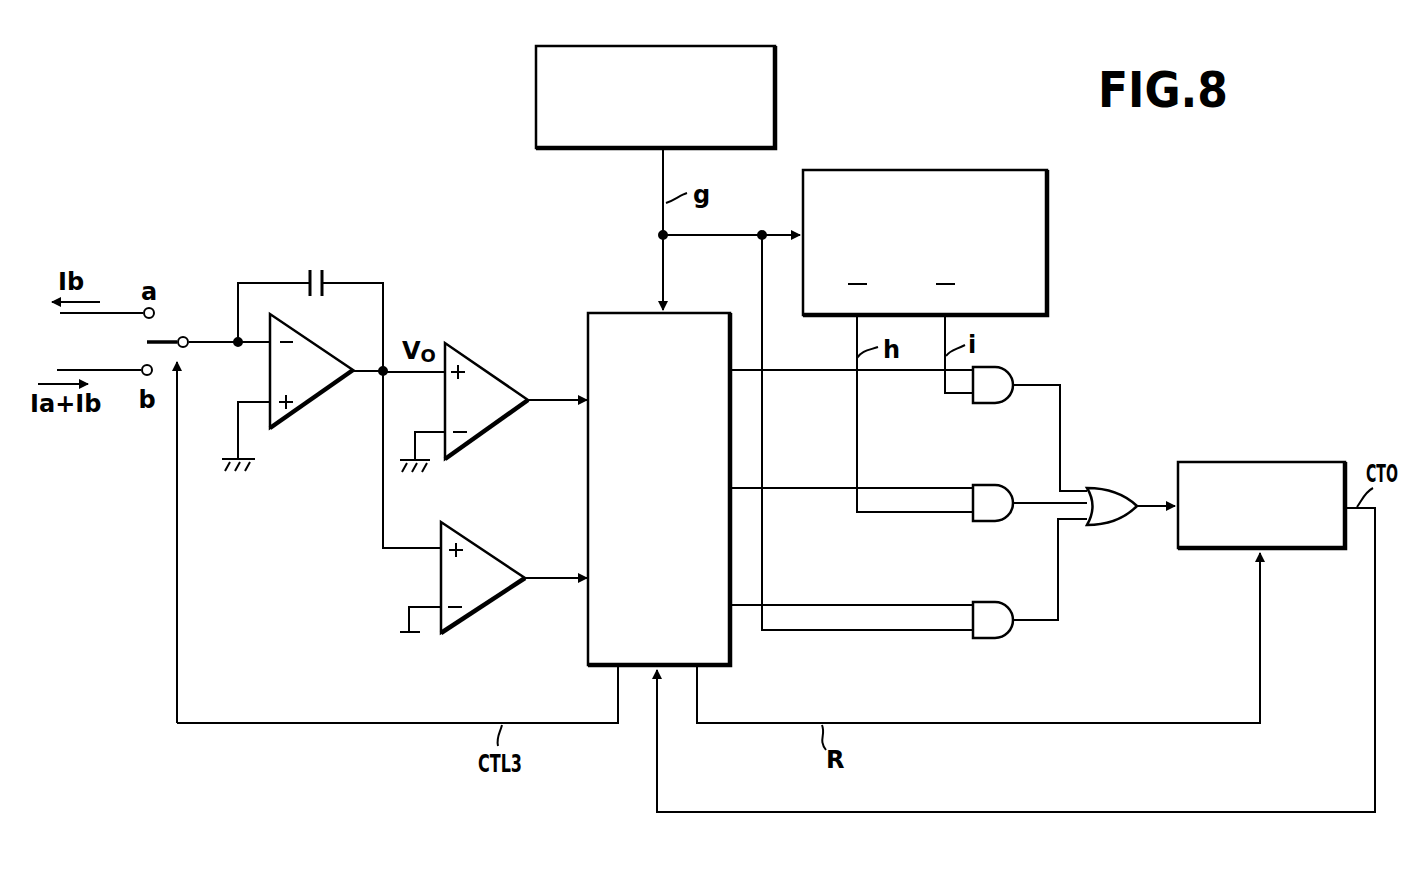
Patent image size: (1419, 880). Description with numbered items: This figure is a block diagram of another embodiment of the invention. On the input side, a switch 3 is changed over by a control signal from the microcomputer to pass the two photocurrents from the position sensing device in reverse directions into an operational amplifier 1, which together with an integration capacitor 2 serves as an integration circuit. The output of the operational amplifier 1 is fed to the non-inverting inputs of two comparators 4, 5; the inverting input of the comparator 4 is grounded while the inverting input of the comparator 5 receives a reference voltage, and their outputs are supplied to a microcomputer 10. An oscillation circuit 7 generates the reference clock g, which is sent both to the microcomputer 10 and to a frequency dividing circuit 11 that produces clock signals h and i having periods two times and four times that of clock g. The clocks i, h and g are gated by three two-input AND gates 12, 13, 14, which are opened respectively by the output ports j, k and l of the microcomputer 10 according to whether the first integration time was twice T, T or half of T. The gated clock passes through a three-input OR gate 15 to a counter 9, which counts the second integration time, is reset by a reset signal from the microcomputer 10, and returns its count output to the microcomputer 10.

The operational amplifier 1 is at (307, 407).
The integration capacitor 2 is at (315, 270).
The switch 3 is at (168, 330).
The comparator 4 is at (490, 374).
The comparator 5 is at (492, 559).
The oscillation circuit 7 is at (777, 92).
The counter 9 is at (1252, 462).
The microcomputer 10 is at (612, 313).
The frequency dividing circuit 11 is at (917, 170).
The 2-input AND gate 12 is at (1008, 367).
The 2-input AND gate 13 is at (998, 485).
The 2-input AND gate 14 is at (993, 602).
The 3-input OR gate 15 is at (1103, 488).